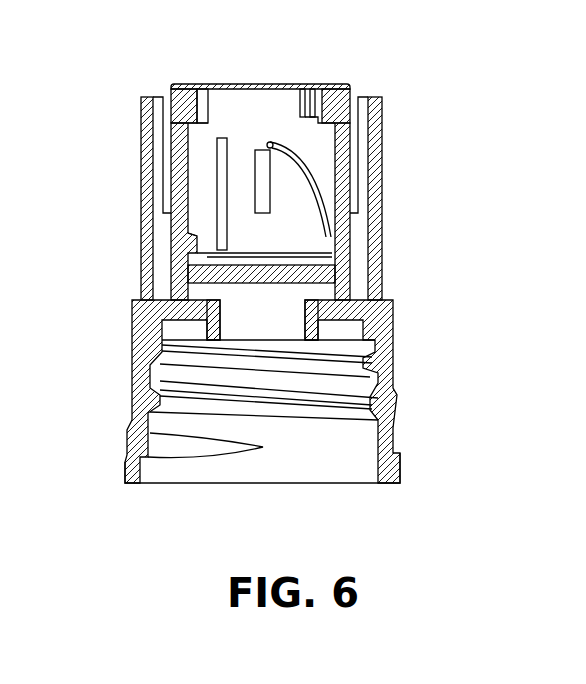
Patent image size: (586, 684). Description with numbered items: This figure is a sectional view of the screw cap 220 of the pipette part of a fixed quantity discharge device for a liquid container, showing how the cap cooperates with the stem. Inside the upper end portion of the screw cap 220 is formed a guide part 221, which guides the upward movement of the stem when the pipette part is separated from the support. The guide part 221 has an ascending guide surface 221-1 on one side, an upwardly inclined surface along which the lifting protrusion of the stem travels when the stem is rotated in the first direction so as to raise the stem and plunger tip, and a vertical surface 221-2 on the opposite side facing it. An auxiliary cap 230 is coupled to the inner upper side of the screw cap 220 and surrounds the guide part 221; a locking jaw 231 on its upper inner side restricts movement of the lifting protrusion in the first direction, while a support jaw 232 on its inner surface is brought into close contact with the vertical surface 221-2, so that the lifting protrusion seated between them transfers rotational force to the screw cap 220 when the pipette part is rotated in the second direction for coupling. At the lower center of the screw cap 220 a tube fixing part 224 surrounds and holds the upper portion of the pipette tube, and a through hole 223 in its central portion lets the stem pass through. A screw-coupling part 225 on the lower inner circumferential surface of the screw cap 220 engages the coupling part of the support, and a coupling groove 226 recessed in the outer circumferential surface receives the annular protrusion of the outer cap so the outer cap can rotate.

The screw cap 220 is at (386, 236).
The guide part 221 is at (300, 198).
The ascending guide surface 221-1 is at (330, 160).
The vertical surface 221-2 is at (265, 235).
The through hole 223 is at (345, 290).
The tube fixing part 224 is at (380, 310).
The screw-coupling part 225 is at (368, 395).
The coupling groove 226 is at (397, 456).
The auxiliary cap 230 is at (160, 147).
The locking jaw 231 is at (186, 84).
The support jaw 232 is at (262, 187).